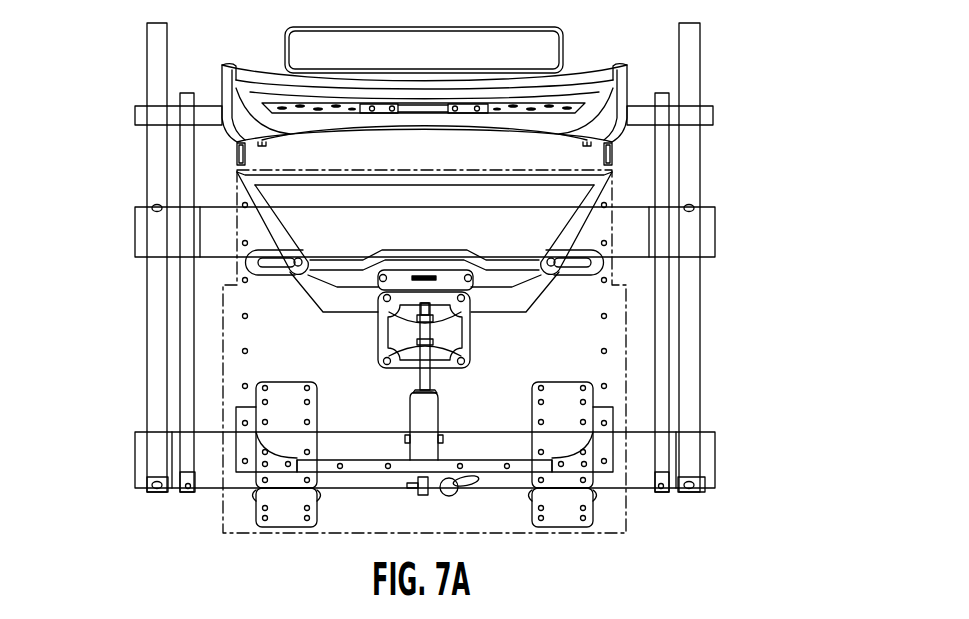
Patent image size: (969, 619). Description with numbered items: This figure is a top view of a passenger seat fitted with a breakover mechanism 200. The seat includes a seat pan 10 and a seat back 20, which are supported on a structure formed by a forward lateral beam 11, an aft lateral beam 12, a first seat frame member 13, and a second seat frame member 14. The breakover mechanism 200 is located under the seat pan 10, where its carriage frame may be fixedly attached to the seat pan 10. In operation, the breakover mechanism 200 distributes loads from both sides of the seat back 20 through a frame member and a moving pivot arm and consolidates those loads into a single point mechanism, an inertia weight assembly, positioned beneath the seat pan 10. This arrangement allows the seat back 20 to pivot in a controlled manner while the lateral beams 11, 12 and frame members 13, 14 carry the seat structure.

The breakover mechanism 200 is at (200, 184).
The seat back 20 is at (613, 108).
The aft lateral beam 12 is at (640, 225).
The seat pan 10 is at (593, 332).
The first seat frame member 13 is at (662, 398).
The second seat frame member 14 is at (190, 318).
The forward lateral beam 11 is at (210, 455).